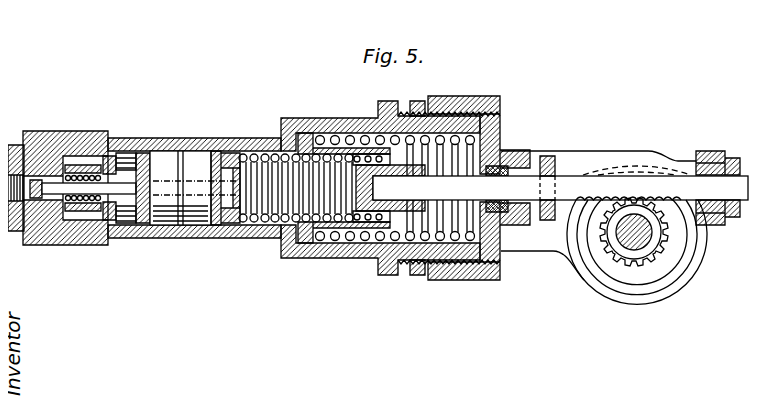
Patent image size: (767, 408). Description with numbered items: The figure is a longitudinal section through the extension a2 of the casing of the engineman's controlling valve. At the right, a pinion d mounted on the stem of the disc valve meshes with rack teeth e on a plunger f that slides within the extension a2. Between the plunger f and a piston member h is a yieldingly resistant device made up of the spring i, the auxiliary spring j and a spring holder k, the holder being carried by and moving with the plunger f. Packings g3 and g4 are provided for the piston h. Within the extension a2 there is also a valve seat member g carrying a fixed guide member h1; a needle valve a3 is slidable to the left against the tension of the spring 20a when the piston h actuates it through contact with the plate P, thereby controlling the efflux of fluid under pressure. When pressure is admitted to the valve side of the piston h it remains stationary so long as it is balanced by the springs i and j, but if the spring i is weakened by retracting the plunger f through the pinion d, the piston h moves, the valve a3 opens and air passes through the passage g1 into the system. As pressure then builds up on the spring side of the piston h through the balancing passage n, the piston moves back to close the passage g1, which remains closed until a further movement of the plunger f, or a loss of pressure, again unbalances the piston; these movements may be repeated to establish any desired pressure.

The valve seat member g is at (79, 144).
The fixed guide member h1 is at (100, 160).
The plate P is at (132, 147).
The piston member h is at (148, 147).
The balancing passage n is at (189, 176).
The passage g1 is at (32, 192).
The needle valve a3 is at (62, 203).
The spring 20a is at (67, 207).
The packing g3 is at (133, 207).
The packing g4 is at (207, 218).
The spring i is at (258, 235).
The extension of the casing a2 is at (293, 250).
The spring holder k is at (355, 232).
The auxiliary spring j is at (445, 235).
The plunger f is at (568, 170).
The rack teeth e is at (595, 192).
The pinion d is at (657, 238).